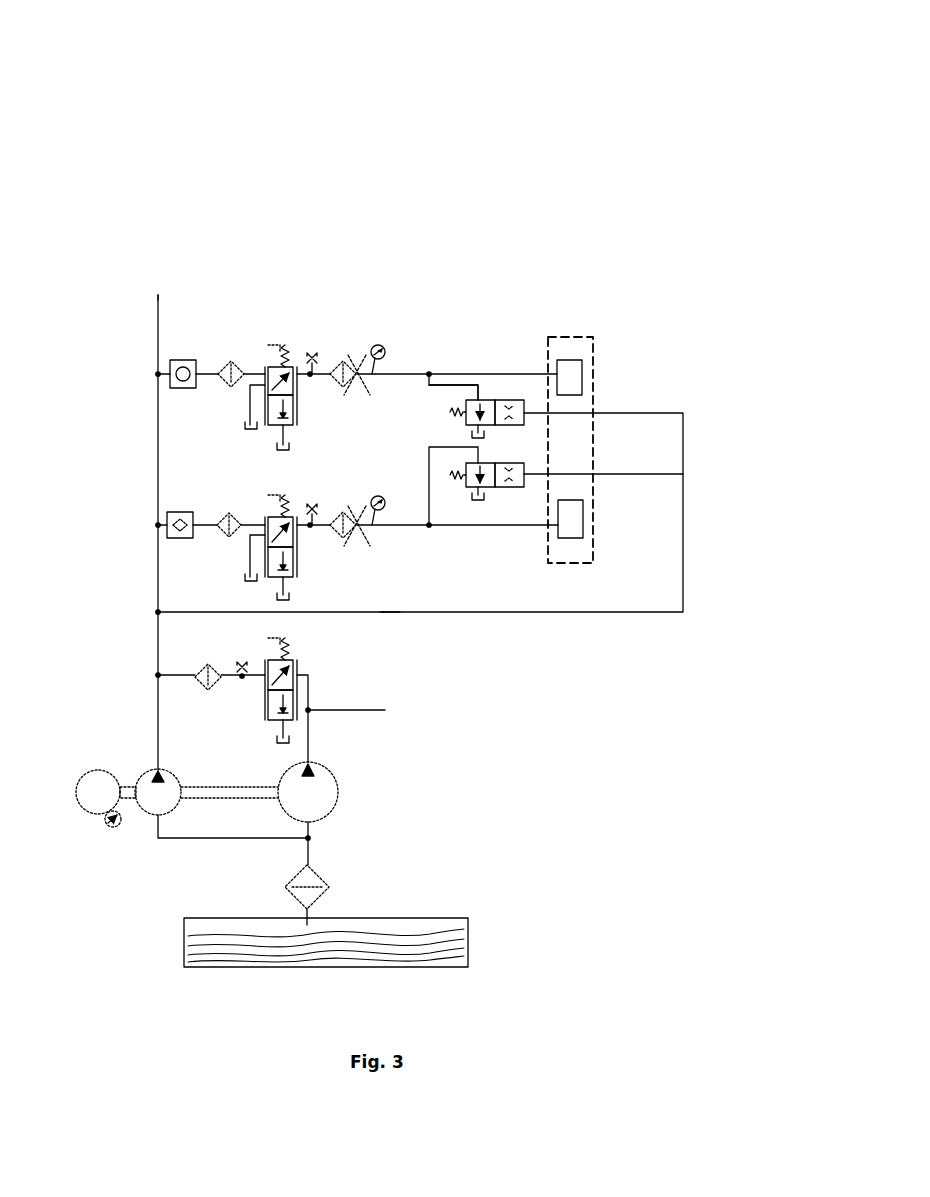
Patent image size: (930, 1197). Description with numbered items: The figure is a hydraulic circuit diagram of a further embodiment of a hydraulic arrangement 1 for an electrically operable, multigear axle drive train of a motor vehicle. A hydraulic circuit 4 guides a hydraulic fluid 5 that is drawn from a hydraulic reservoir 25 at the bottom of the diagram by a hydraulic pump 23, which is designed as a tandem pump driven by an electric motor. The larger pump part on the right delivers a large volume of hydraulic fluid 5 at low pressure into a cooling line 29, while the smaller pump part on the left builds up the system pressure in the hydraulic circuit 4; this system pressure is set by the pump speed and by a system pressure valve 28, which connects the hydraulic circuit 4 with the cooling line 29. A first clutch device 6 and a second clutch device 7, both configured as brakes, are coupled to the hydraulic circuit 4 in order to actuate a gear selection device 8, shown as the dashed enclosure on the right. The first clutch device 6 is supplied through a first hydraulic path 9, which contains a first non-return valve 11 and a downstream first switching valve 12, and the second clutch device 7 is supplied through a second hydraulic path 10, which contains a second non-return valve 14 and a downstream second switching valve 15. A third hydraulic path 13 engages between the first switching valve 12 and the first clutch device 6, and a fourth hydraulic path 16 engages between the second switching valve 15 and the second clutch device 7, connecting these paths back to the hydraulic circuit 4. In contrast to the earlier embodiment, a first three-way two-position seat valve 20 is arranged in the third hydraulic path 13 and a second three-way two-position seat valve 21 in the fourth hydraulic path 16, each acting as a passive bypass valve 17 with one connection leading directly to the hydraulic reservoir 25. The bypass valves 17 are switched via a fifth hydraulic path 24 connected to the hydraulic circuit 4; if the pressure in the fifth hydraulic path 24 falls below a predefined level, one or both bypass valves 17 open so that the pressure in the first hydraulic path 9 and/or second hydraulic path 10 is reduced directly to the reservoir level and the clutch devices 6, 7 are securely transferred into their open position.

The hydraulic arrangement 1 is at (186, 127).
The hydraulic circuit 4 is at (150, 712).
The hydraulic fluid 5 is at (470, 945).
The first clutch device 6 is at (576, 520).
The second clutch device 7 is at (576, 378).
The gear selection device 8 is at (572, 336).
The first hydraulic path 9 is at (468, 527).
The second hydraulic path 10 is at (398, 368).
The first non-return valve 11 is at (187, 512).
The first switching valve 12 is at (352, 560).
The third hydraulic path 13 is at (452, 476).
The second non-return valve 14 is at (186, 360).
The second switching valve 15 is at (299, 249).
The fourth hydraulic path 16 is at (455, 384).
The passive bypass valve 17 is at (506, 406).
The first 3/2 seat valve 20 is at (522, 573).
The second 3/2 seat valve 21 is at (490, 398).
The hydraulic pump 23 is at (126, 831).
The fifth hydraulic path 24 is at (387, 613).
The hydraulic reservoir 25 is at (245, 426).
The system pressure valve 28 is at (296, 673).
The cooling line 29 is at (357, 713).